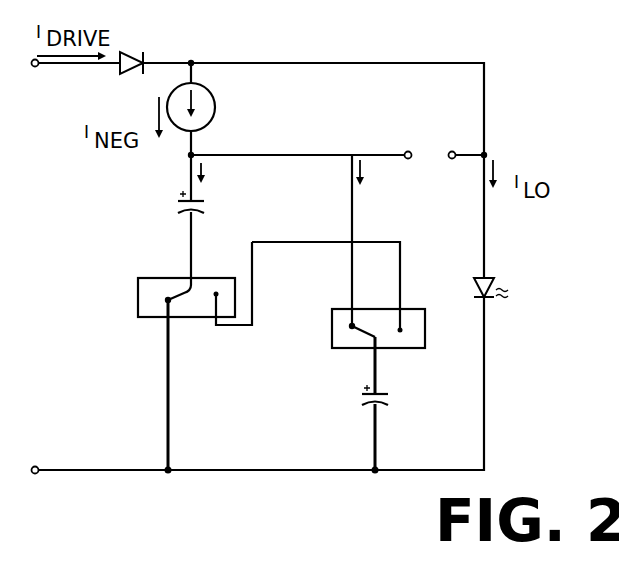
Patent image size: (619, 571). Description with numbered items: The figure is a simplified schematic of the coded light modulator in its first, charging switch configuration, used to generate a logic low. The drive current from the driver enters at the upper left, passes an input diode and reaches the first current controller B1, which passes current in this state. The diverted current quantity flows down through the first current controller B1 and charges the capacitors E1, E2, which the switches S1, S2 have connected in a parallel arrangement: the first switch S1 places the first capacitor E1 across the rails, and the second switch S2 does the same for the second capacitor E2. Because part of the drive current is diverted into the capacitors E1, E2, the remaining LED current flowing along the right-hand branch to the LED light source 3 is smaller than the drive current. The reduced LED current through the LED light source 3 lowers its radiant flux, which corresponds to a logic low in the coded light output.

The first current controller B1 is at (215, 105).
The first capacitor E1 is at (205, 210).
The second capacitor E2 is at (389, 401).
The first switch S1 is at (138, 318).
The second switch S2 is at (332, 349).
The LED light source 3 is at (490, 281).